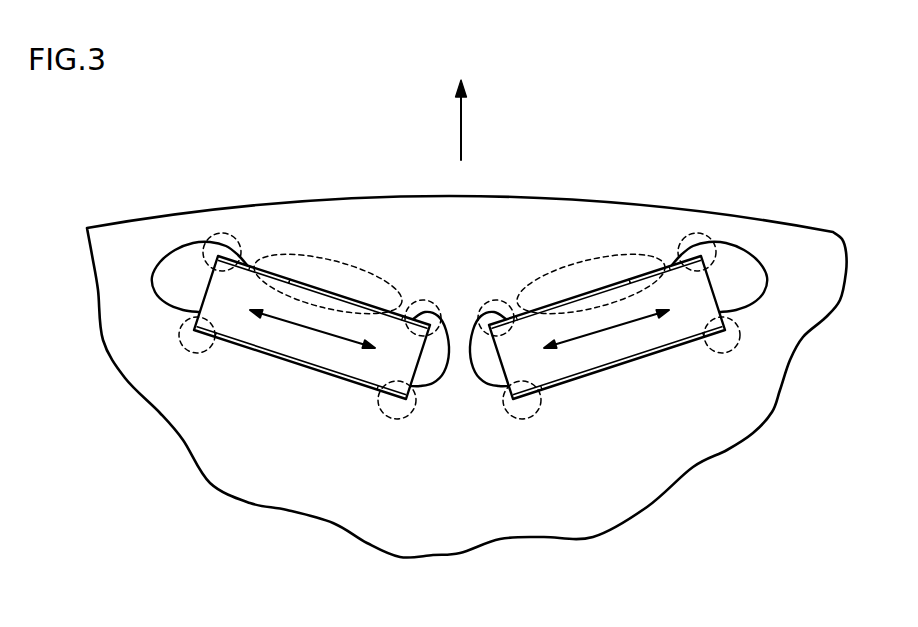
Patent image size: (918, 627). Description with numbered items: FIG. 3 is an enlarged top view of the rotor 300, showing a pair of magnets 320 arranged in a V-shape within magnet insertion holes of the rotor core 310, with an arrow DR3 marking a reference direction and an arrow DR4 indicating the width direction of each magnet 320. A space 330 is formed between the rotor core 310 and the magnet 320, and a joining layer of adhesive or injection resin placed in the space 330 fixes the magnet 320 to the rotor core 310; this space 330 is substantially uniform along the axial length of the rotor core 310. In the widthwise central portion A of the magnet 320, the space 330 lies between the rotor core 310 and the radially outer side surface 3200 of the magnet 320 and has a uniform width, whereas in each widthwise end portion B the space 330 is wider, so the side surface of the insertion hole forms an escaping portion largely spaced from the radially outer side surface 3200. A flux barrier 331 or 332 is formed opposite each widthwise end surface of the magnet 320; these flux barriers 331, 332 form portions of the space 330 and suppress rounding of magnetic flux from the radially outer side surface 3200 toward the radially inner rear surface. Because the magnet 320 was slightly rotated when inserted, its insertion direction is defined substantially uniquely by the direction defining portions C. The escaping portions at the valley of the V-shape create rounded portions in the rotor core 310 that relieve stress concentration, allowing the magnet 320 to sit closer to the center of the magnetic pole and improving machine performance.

The vibration unit assembly 300 is at (188, 126).
The rotor core 310 is at (690, 442).
The magnet 320 is at (349, 381).
The radially outer side surface 3200 is at (250, 264).
The space 330 is at (291, 277).
The flux barrier 331 is at (183, 275).
The flux barrier 332 is at (438, 382).
The widthwise central portion A is at (343, 263).
The widthwise end portion B is at (223, 233).
The direction defining portion C is at (197, 354).
The arrow DR3 is at (461, 121).
The arrow DR4 is at (314, 345).